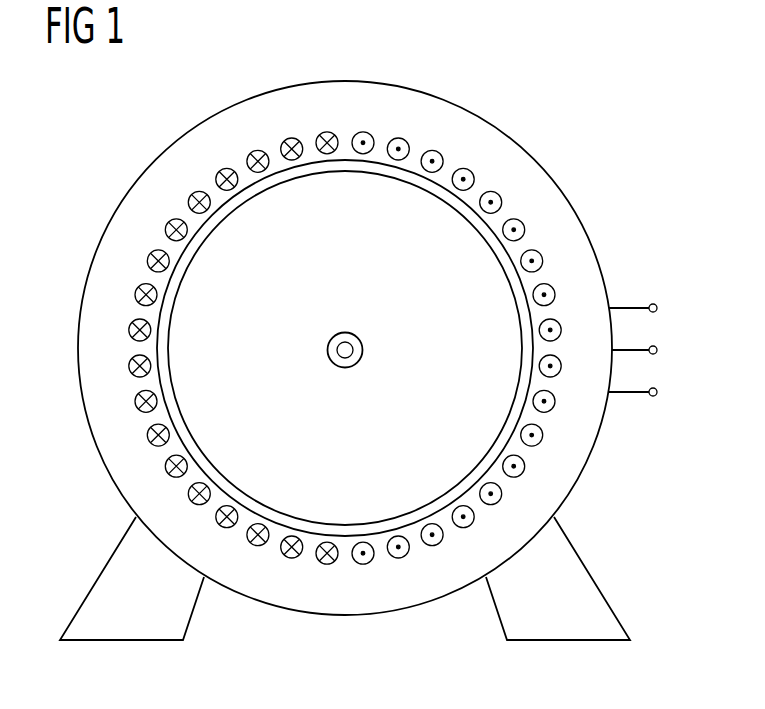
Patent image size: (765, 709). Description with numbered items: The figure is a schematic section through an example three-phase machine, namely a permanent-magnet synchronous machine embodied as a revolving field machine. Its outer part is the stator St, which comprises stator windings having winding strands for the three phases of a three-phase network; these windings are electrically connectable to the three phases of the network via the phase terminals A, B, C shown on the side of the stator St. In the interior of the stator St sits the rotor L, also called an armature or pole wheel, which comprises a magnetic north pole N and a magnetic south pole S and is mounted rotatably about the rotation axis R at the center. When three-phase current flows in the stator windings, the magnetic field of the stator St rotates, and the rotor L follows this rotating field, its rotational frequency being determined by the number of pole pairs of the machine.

The stator St is at (347, 96).
The rotor L is at (402, 203).
The rotation axis R is at (363, 350).
The magnetic south pole S is at (345, 196).
The magnetic north pole N is at (346, 491).
The phase terminal A is at (647, 308).
The phase terminal B is at (648, 350).
The phase terminal C is at (646, 392).